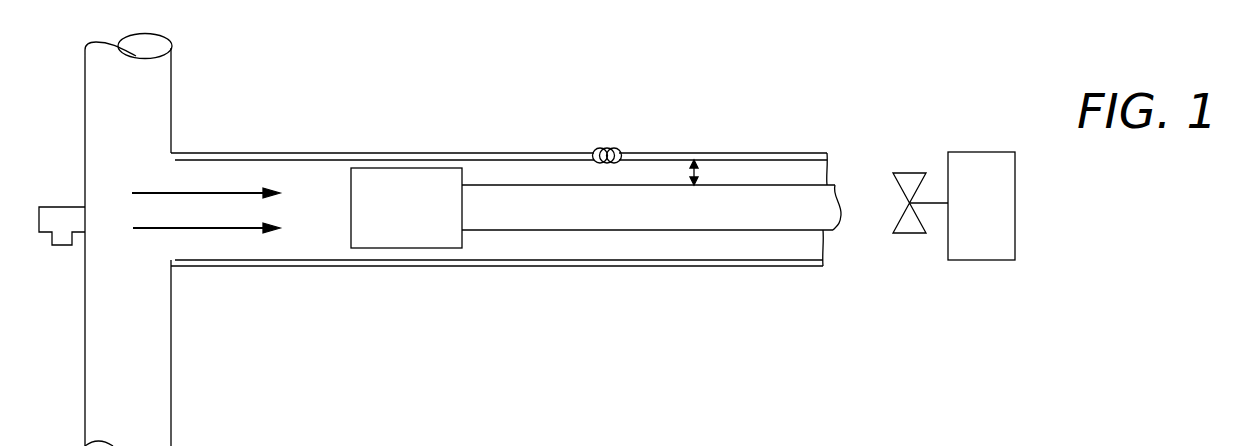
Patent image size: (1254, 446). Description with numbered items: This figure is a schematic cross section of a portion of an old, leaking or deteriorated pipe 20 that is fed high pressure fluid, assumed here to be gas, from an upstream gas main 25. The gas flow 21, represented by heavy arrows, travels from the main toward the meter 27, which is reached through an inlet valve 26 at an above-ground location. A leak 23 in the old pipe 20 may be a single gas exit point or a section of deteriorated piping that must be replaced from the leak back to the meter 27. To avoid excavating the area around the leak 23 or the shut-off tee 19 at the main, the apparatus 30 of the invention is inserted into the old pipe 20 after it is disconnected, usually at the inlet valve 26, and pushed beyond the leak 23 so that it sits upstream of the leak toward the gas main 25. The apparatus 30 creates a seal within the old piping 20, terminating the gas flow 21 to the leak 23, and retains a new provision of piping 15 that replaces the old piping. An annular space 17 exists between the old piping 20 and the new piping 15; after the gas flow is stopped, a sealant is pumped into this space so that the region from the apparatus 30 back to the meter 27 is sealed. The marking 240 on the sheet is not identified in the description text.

The inner sample tube 15 is at (516, 223).
The annular gap 17 is at (709, 174).
The mounting flange 19 is at (55, 207).
The outer tube 20 is at (817, 152).
The gas flow 21 is at (150, 229).
The heating coil 23 is at (615, 149).
The main duct 25 is at (112, 102).
The valve 26 is at (910, 235).
The analyzer unit 27 is at (970, 214).
The sensor unit 30 is at (384, 223).
The sheet marker 240 is at (1140, 435).